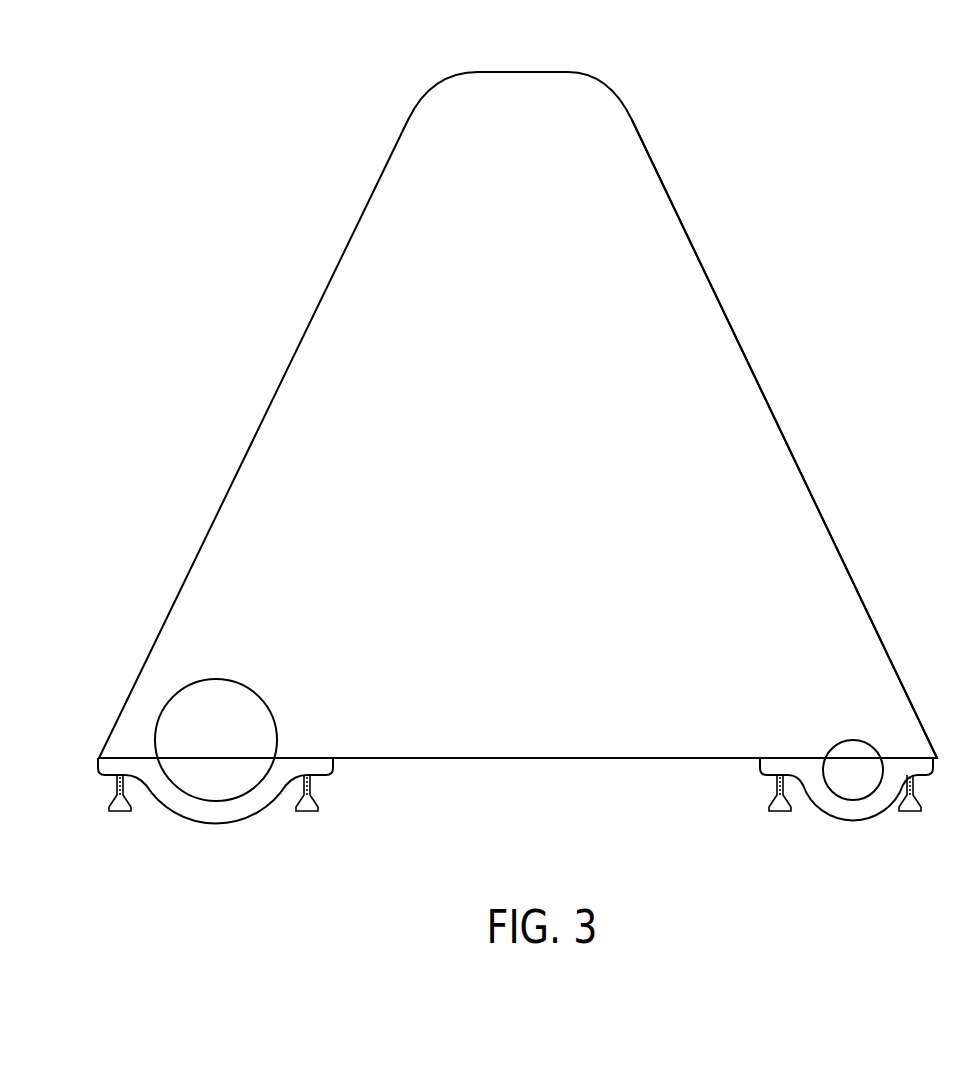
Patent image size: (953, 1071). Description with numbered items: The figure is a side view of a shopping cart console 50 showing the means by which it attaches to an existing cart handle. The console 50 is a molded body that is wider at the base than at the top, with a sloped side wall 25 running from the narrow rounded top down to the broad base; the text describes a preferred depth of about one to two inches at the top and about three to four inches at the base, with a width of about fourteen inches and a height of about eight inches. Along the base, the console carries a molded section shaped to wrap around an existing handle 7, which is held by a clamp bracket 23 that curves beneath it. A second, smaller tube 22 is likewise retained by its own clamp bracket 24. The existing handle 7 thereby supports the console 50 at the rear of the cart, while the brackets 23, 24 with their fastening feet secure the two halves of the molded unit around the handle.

The tower body / trapezoidal housing 50 is at (262, 412).
The sloped side wall 25 is at (747, 352).
The large pipe 7 is at (172, 690).
The large pipe clamp bracket 23 is at (263, 815).
The small pipe 22 is at (830, 745).
The small pipe clamp bracket 24 is at (820, 810).